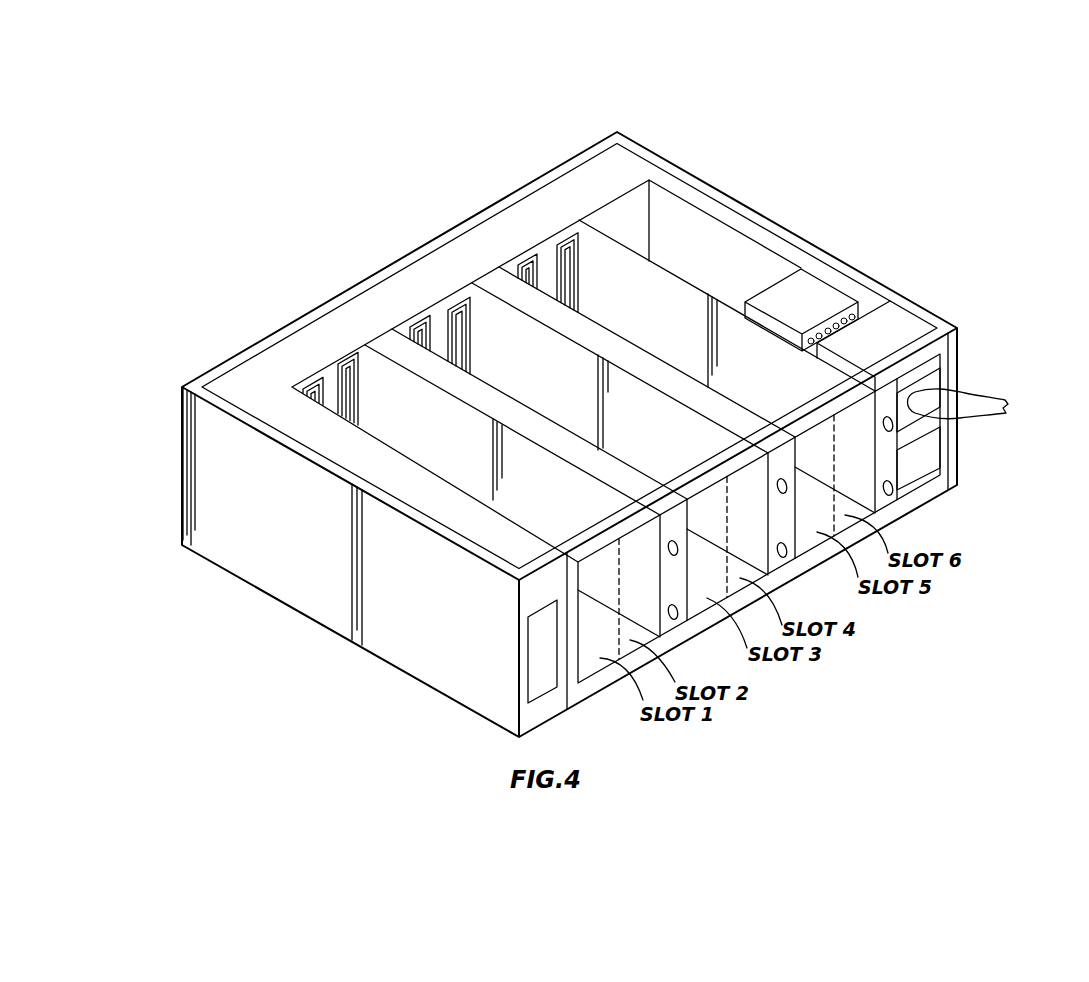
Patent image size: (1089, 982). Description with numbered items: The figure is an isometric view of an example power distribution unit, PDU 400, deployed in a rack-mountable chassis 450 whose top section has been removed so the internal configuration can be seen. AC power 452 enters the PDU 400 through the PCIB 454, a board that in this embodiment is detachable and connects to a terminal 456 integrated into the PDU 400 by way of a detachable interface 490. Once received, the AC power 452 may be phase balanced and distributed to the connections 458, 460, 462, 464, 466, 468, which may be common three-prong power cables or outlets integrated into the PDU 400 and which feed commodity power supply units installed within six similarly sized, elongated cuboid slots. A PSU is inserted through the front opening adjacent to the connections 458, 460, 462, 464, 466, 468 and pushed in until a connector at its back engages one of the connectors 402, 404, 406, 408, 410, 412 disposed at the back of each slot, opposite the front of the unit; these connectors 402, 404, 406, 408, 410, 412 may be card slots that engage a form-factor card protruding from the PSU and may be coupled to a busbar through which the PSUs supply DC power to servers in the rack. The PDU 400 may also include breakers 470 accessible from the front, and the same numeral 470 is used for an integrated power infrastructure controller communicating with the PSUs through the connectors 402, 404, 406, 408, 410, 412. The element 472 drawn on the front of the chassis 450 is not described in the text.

The PDU 400 is at (787, 210).
The connector 402 is at (305, 382).
The connector 404 is at (350, 355).
The connector 406 is at (414, 322).
The connector 408 is at (452, 305).
The connector 410 is at (520, 260).
The connector 412 is at (560, 240).
The rack-mountable chassis 450 is at (245, 579).
The AC power 452 is at (985, 387).
The PCIB 454 is at (880, 335).
The terminal 456 is at (825, 292).
The connection 458 is at (666, 612).
The connection 460 is at (666, 548).
The connection 462 is at (777, 548).
The connection 464 is at (775, 487).
The connection 466 is at (883, 487).
The connection 468 is at (882, 423).
The breakers 470 is at (932, 460).
The indicator panel 472 is at (528, 675).
The detachable interface 490 is at (858, 317).